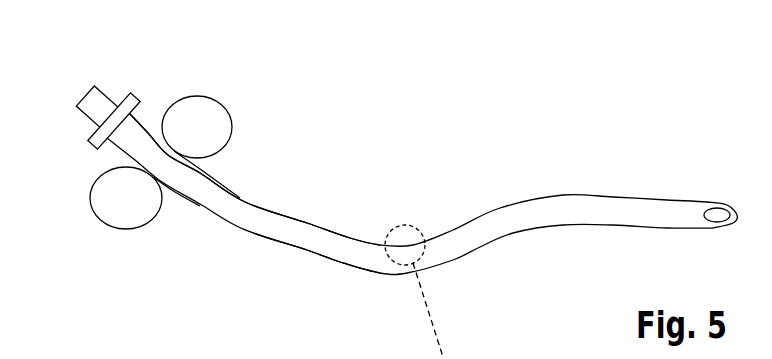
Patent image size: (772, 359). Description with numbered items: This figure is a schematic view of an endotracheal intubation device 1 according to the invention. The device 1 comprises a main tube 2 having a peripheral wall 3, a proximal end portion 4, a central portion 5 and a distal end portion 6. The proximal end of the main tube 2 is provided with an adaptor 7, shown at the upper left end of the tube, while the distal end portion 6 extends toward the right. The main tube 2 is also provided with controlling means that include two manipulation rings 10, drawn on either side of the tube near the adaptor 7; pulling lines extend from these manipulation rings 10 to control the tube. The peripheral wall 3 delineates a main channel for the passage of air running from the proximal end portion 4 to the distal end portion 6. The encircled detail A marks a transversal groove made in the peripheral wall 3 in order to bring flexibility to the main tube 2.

The endotracheal intubation device 1 is at (587, 183).
The main tube 2 is at (277, 200).
The peripheral wall 3 is at (302, 243).
The proximal end portion 4 is at (150, 112).
The central portion 5 is at (379, 223).
The distal end portion 6 is at (730, 232).
The adaptor 7 is at (82, 123).
The manipulation rings 10 is at (102, 225).